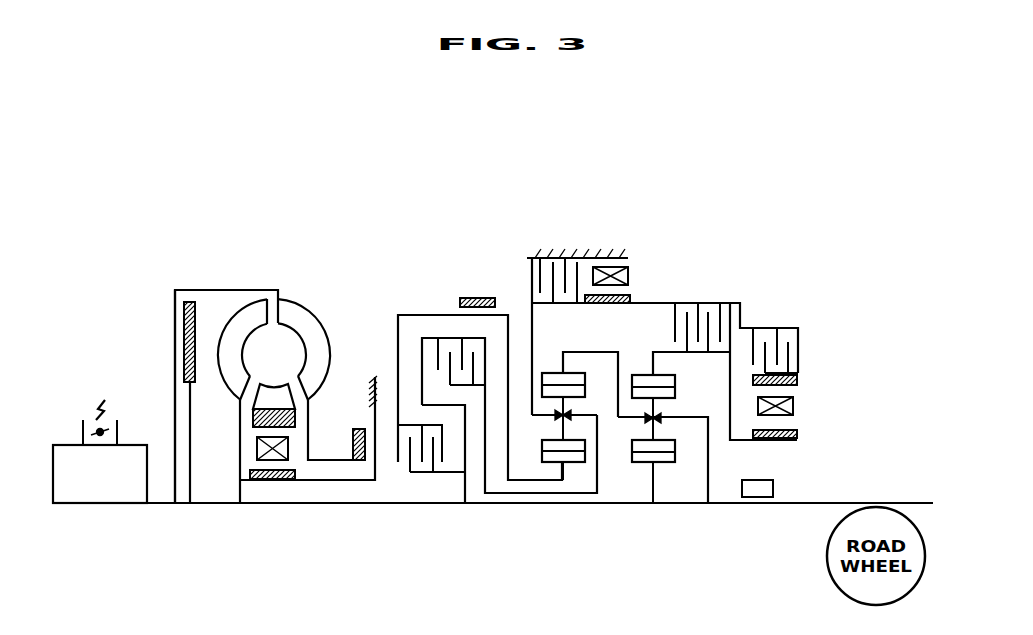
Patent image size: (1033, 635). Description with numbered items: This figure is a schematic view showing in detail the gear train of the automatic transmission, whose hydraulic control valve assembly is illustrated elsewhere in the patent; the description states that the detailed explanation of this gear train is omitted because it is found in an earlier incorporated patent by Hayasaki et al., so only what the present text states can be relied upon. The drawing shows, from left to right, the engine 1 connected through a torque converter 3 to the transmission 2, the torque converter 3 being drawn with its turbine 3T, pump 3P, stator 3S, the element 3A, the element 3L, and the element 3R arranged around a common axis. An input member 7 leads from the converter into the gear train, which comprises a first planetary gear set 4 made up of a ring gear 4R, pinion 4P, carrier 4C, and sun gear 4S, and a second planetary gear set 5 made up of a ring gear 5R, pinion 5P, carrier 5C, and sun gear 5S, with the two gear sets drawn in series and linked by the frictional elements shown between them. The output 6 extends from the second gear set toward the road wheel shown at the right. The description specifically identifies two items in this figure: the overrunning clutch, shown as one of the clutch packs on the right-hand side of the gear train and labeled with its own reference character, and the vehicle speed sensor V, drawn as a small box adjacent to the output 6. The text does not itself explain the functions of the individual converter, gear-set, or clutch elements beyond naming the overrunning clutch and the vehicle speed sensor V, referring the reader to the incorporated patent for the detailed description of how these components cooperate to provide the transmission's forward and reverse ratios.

The engine 1 is at (160, 504).
The transmission housing 2 is at (308, 478).
The torque converter 3 is at (249, 348).
The turbine 3T is at (237, 316).
The pump impeller 3P is at (322, 350).
The stator 3S is at (302, 392).
The torque converter chamber 3A is at (288, 341).
The lock-up clutch 3L is at (183, 347).
The torque converter cover 3R is at (180, 413).
The first planetary gear set 4 is at (665, 446).
The first ring gear 4R is at (552, 375).
The first pinion gear 4P is at (583, 388).
The first carrier 4C is at (588, 415).
The first sun gear 4S is at (550, 455).
The second planetary gear set 5 is at (669, 457).
The second ring gear 5R is at (665, 378).
The second pinion gear 5P is at (677, 444).
The second carrier 5C is at (683, 418).
The second sun gear 5S is at (644, 457).
The output shaft 6 is at (793, 505).
The input shaft 7 is at (245, 455).
The vehicle speed sensor V is at (755, 480).